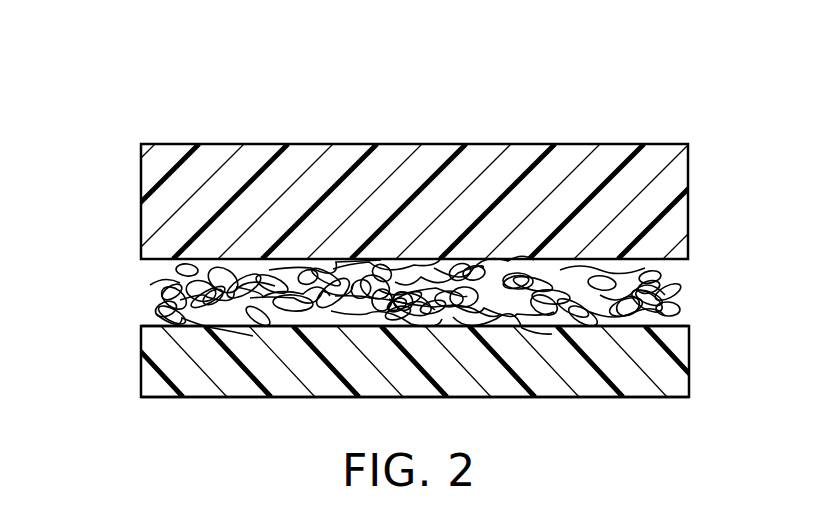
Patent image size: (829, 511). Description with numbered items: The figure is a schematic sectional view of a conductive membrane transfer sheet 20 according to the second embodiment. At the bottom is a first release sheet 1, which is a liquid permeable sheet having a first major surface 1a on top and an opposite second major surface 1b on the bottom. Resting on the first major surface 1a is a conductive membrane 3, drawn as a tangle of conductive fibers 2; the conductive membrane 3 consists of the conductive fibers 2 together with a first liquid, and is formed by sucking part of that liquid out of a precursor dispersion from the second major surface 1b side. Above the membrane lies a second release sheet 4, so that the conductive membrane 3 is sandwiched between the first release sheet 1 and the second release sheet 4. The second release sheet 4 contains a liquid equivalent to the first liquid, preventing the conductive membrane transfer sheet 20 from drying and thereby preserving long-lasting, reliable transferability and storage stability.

The conductive membrane transfer sheet 20 is at (628, 111).
The second release sheet 4 is at (156, 205).
The first release sheet 1 is at (155, 362).
The first major surface 1a is at (150, 318).
The second major surface 1b is at (153, 397).
The conductive fibers 2 is at (158, 300).
The conductive membrane 3 is at (695, 260).